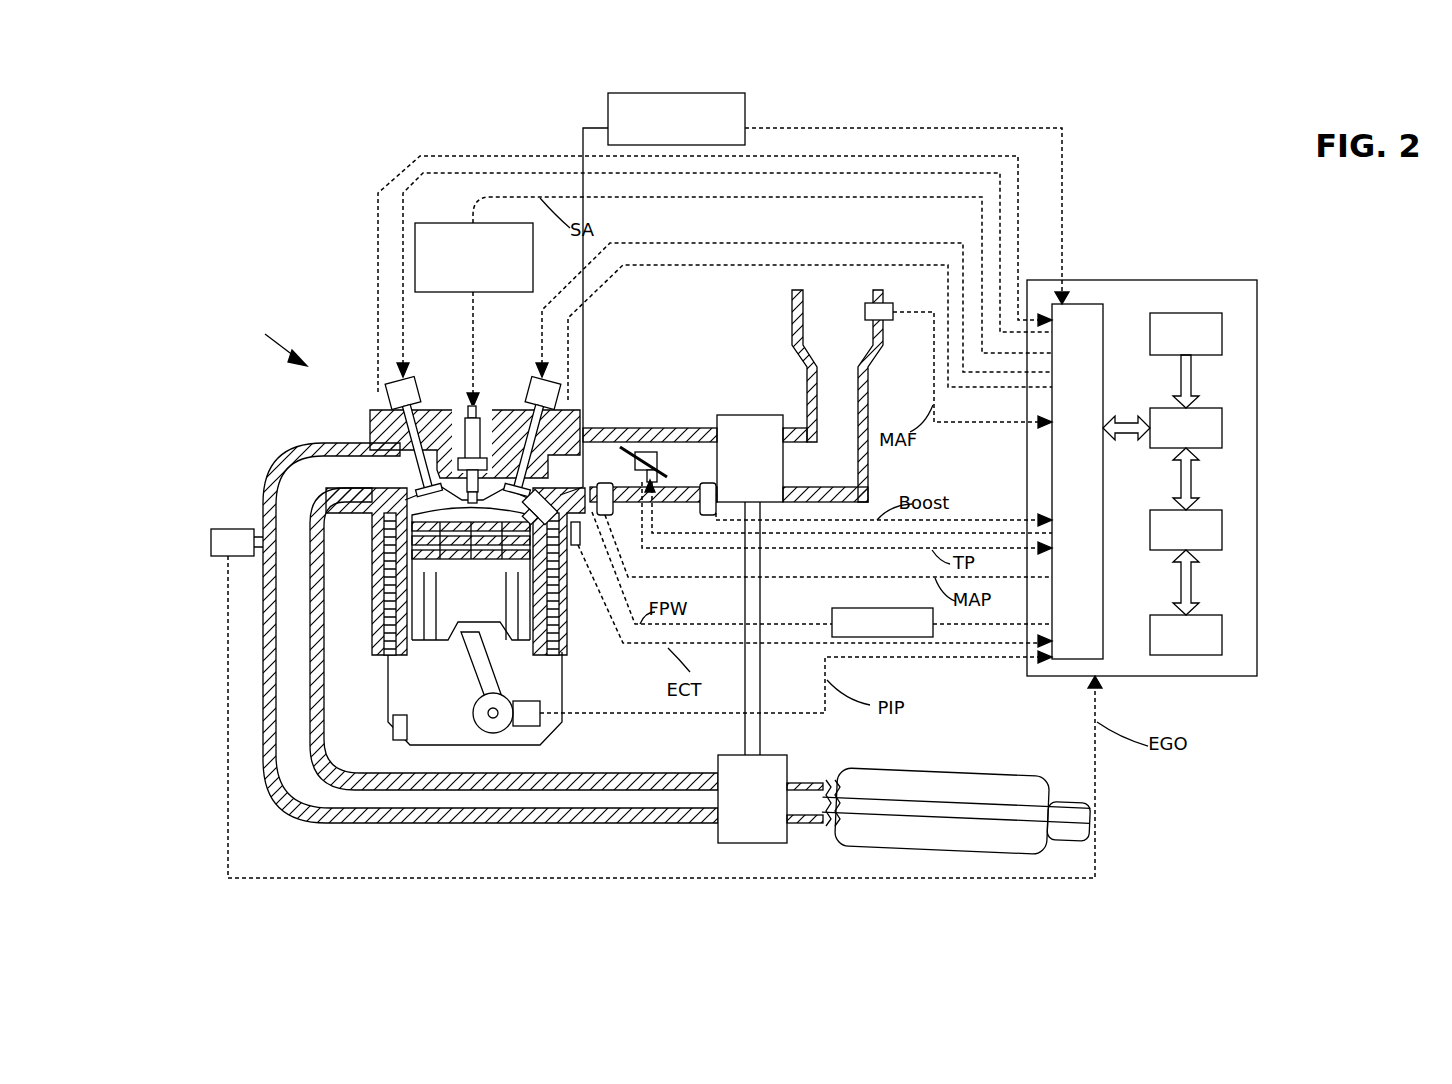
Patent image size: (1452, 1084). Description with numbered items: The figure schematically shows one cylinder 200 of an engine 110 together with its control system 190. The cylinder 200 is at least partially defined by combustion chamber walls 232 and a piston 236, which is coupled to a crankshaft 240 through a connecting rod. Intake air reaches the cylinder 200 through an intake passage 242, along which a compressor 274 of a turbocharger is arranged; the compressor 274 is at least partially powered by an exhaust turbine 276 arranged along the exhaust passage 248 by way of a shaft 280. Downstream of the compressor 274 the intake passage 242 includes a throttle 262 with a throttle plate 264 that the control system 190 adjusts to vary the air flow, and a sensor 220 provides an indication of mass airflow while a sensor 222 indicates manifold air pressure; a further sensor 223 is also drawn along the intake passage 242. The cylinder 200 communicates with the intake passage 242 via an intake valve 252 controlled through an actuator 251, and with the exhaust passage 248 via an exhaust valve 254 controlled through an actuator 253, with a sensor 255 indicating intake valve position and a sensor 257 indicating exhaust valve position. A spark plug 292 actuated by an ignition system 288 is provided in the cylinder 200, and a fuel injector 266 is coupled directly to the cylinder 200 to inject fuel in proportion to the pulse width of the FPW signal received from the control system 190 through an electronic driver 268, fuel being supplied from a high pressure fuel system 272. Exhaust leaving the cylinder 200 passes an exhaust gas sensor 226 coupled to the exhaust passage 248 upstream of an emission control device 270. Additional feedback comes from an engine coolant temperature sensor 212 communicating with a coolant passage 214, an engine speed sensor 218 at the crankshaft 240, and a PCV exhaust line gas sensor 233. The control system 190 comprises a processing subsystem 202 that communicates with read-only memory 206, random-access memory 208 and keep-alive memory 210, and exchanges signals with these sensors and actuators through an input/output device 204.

The engine 110 is at (268, 342).
The control system 190 is at (1260, 282).
The input/output device 204 is at (1105, 312).
The read-only memory (ROM) 206 is at (1224, 332).
The processing subsystem (CPU) 202 is at (1224, 428).
The random-access memory (RAM) 208 is at (1224, 532).
The keep-alive memory (KAM) 210 is at (1224, 636).
The high pressure fuel system 272 is at (745, 130).
The ignition system 288 is at (426, 223).
The exhaust valve position sensor 257 is at (392, 398).
The exhaust valve actuator 253 is at (418, 378).
The intake valve actuator 251 is at (536, 385).
The intake valve position sensor 255 is at (560, 400).
The cylinder 200 is at (380, 540).
The exhaust valve 254 is at (428, 468).
The intake valve 252 is at (520, 440).
The spark plug 292 is at (466, 438).
The combustion chamber walls 232 is at (405, 655).
The coolant passage 214 is at (566, 645).
The piston 236 is at (458, 618).
The PCV exhaust line gas sensor 233 is at (392, 732).
The crankshaft 240 is at (487, 735).
The engine speed sensor 218 is at (531, 727).
The exhaust passage 248 is at (328, 485).
The exhaust gas sensor 226 is at (211, 534).
The compressor 274 is at (733, 415).
The exhaust turbine 276 is at (716, 828).
The shaft 280 is at (762, 720).
The intake passage 242 is at (823, 340).
The mass airflow sensor 220 is at (893, 304).
The throttle plate 264 is at (640, 450).
The throttle 262 is at (648, 452).
The manifold air pressure sensor 222 is at (609, 518).
The boost pressure sensor 223 is at (698, 506).
The fuel injector 266 is at (545, 500).
The electronic driver 268 is at (832, 610).
The engine coolant temperature sensor 212 is at (582, 545).
The emission control device 270 is at (1005, 782).